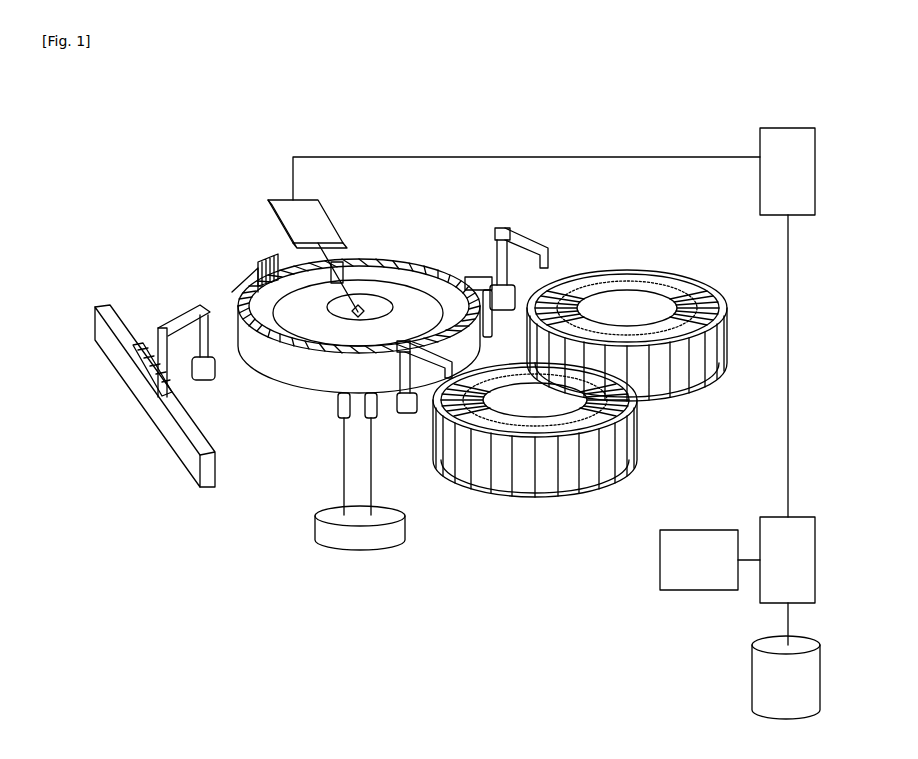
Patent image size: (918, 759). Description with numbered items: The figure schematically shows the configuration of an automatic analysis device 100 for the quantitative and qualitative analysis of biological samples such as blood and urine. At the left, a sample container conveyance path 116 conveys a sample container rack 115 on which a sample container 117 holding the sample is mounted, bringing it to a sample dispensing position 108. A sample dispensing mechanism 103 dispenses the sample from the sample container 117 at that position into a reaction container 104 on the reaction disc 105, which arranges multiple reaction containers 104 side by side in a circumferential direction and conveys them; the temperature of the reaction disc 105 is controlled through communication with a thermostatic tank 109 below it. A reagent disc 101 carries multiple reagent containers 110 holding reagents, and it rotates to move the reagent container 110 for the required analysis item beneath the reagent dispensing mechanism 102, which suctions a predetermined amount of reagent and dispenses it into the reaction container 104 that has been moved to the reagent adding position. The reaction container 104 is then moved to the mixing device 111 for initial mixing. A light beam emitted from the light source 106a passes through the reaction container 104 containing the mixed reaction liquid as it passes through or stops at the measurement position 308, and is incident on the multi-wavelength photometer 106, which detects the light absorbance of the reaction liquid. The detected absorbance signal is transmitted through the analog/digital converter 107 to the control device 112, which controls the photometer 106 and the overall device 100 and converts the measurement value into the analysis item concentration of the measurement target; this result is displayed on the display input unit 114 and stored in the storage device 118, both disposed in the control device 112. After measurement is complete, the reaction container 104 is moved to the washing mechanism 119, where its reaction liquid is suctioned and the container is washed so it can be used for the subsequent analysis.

The automatic analysis device 100 is at (555, 101).
The reagent disc 101 is at (612, 268).
The reagent dispensing mechanism 102 is at (520, 228).
The sample dispensing mechanism 103 is at (215, 380).
The reaction container 104 is at (420, 264).
The reaction disc 105 is at (308, 400).
The multi-wavelength photometer 106 is at (285, 198).
The light source 106a is at (362, 307).
The analog/digital (A/D) converter 107 is at (760, 135).
The sample dispensing position 108 is at (133, 373).
The thermostatic tank 109 is at (405, 537).
The reagent container 110 is at (714, 292).
The mixing device 111 is at (472, 277).
The control device 112 is at (762, 517).
The display input unit 114 is at (660, 570).
The sample container rack 115 is at (155, 392).
The sample container conveyance path 116 is at (100, 292).
The sample container 117 is at (160, 328).
The storage device 118 is at (752, 672).
The washing mechanism 119 is at (243, 268).
The measurement position 308 is at (350, 254).